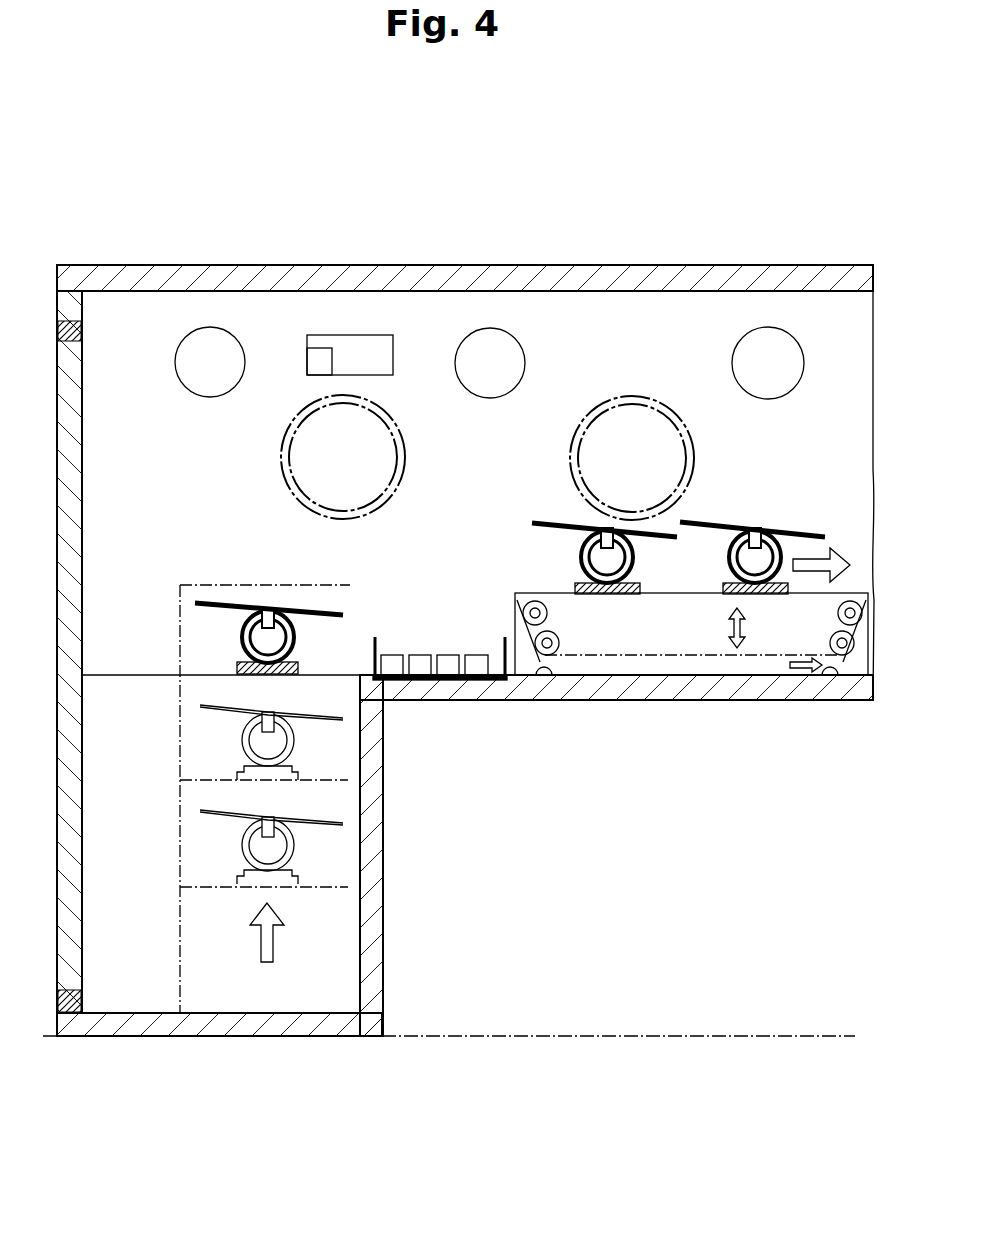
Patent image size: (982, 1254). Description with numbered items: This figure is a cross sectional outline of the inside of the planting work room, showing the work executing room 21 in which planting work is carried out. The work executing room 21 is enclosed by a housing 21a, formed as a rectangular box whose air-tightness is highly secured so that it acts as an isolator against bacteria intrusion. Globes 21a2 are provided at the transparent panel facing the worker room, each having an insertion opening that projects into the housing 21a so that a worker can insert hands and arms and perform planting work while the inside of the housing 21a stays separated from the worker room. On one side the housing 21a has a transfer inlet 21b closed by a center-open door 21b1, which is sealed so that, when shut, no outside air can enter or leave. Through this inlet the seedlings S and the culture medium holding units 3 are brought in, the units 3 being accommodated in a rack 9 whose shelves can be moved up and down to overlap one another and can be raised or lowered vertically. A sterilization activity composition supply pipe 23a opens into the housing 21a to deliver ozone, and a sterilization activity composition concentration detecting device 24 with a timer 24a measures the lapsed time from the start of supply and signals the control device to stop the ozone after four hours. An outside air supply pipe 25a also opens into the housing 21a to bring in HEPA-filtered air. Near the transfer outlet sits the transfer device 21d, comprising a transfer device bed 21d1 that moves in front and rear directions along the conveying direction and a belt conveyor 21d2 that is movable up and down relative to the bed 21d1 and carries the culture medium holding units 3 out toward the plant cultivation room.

The work executing room 21 is at (313, 312).
The housing 21a is at (420, 265).
The center-open door 21b1 is at (78, 440).
The transfer inlet 21b is at (90, 930).
The outside air supply pipe 25a is at (500, 328).
The sterilization activity composition supply pipe 23a is at (745, 328).
The sterilization activity composition concentration detecting device 24 is at (388, 378).
The timer 24a is at (320, 360).
The globe 21a2 is at (575, 430).
The seedlings S is at (420, 655).
The culture medium holding unit 3 is at (300, 628).
The rack 9 is at (320, 780).
The transfer device 21d is at (725, 806).
The transfer device bed 21d1 is at (712, 660).
The belt conveyor 21d2 is at (672, 600).